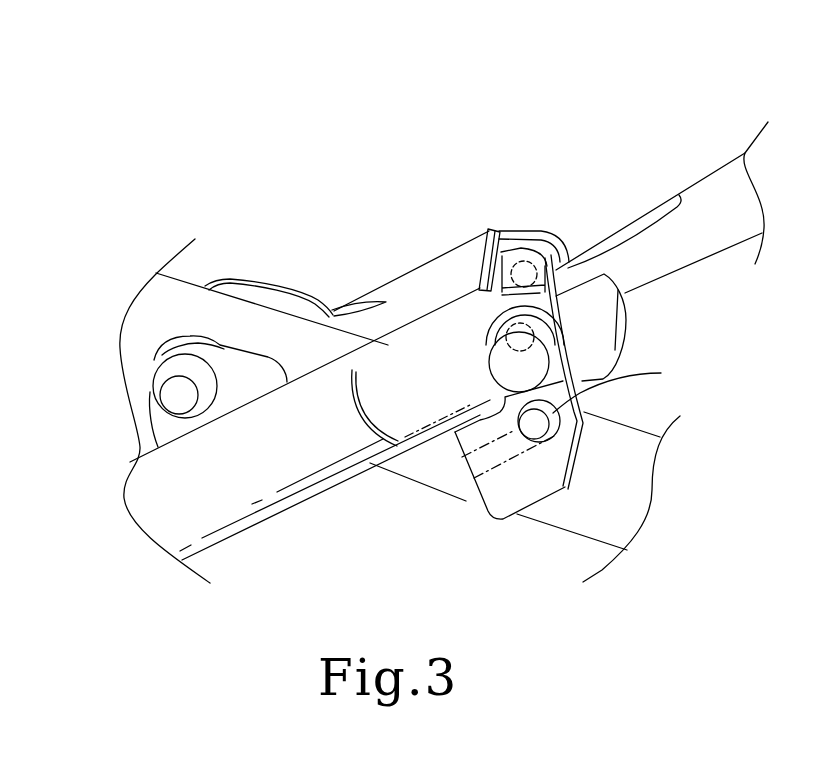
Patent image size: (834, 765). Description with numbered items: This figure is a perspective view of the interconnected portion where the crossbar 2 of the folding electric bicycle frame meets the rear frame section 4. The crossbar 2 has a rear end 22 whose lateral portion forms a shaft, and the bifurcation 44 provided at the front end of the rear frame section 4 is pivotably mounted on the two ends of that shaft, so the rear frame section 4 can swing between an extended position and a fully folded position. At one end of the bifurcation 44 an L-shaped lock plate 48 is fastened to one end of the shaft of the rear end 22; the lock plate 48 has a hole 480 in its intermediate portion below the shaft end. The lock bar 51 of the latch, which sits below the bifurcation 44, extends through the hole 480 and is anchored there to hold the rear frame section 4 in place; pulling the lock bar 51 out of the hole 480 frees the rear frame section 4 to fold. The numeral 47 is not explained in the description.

The crossbar 2 is at (695, 213).
The rear frame section 4 is at (337, 244).
The rear end 22 is at (576, 244).
The bifurcation 44 is at (520, 238).
The tab 47 is at (481, 231).
The lock plate 48 is at (497, 488).
The hole 480 is at (661, 373).
The lock bar 51 is at (530, 430).